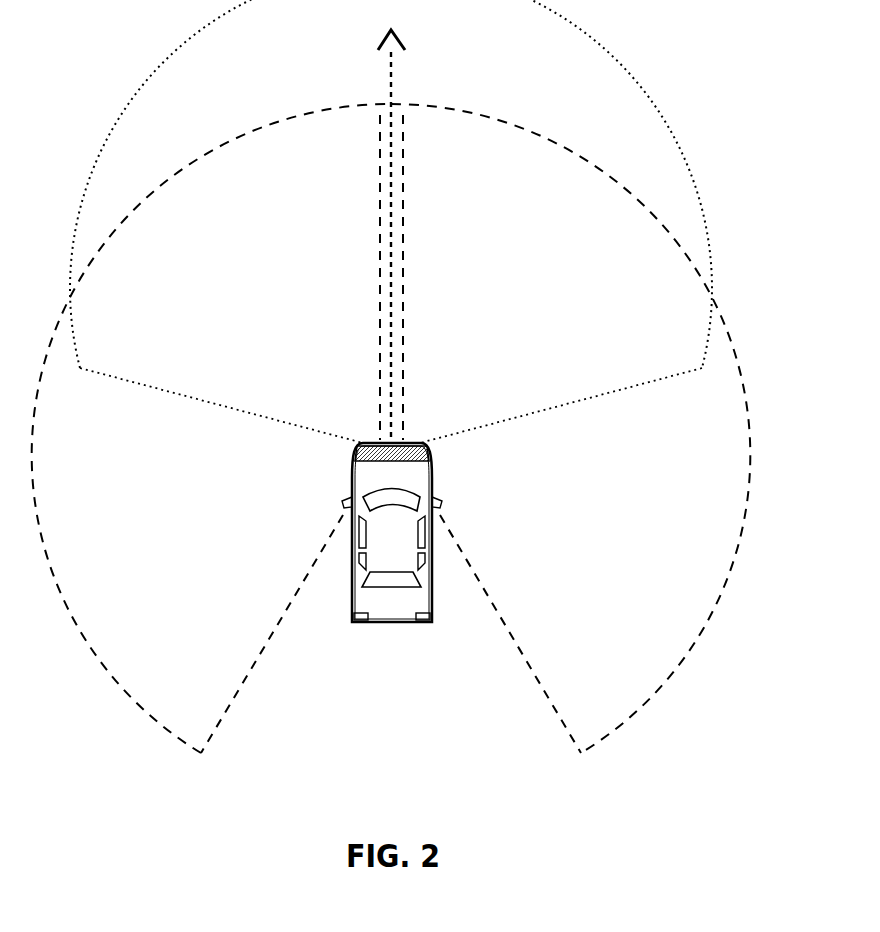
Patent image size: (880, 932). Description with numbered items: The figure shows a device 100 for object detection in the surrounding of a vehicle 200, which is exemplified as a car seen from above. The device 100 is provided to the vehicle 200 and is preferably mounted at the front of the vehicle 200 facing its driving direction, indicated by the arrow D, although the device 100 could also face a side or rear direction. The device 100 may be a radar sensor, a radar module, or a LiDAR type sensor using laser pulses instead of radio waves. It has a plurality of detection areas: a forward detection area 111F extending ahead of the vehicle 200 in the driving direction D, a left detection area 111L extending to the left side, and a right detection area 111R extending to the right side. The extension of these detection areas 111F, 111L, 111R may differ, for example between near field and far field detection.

The direction of travel D is at (387, 78).
The device 100 is at (410, 452).
The vehicle 200 is at (407, 625).
The front field of view 111F is at (162, 352).
The left detection area 111L is at (232, 696).
The right detection area 111R is at (605, 696).